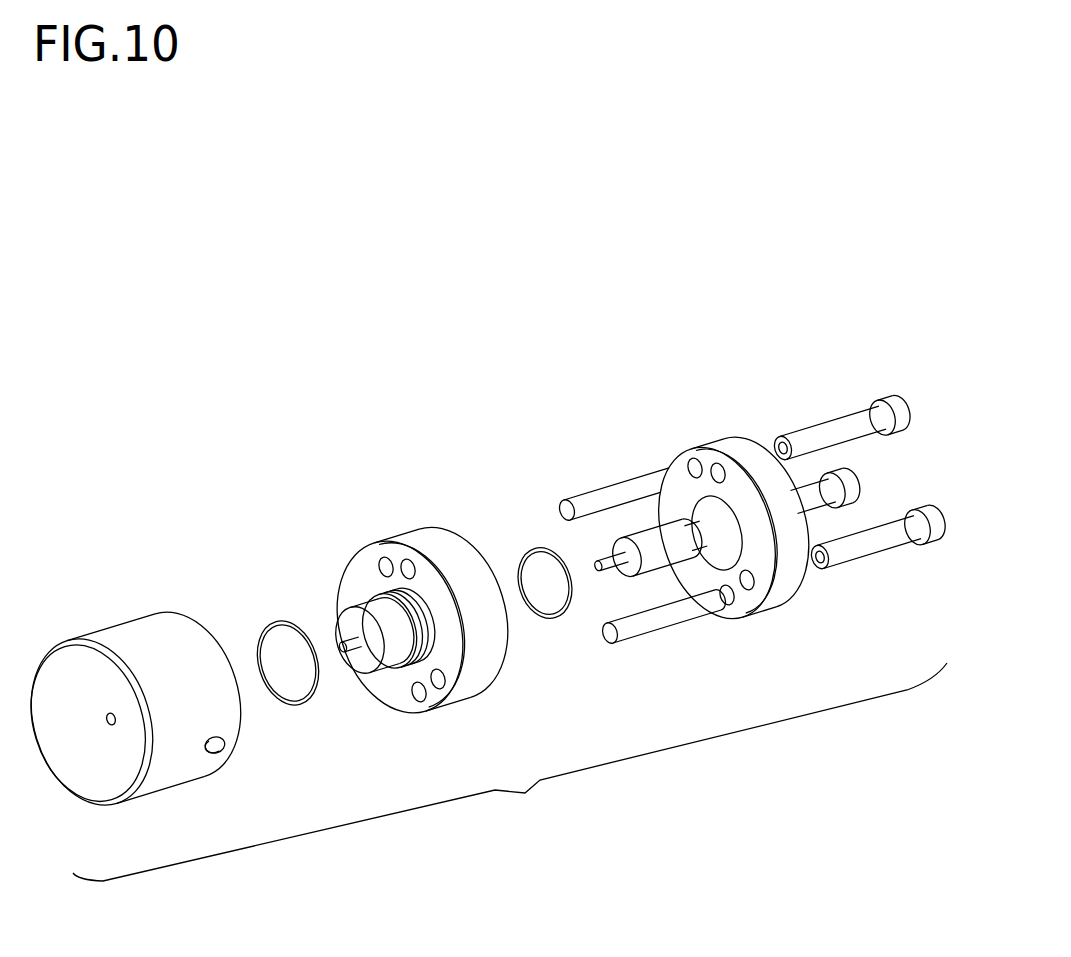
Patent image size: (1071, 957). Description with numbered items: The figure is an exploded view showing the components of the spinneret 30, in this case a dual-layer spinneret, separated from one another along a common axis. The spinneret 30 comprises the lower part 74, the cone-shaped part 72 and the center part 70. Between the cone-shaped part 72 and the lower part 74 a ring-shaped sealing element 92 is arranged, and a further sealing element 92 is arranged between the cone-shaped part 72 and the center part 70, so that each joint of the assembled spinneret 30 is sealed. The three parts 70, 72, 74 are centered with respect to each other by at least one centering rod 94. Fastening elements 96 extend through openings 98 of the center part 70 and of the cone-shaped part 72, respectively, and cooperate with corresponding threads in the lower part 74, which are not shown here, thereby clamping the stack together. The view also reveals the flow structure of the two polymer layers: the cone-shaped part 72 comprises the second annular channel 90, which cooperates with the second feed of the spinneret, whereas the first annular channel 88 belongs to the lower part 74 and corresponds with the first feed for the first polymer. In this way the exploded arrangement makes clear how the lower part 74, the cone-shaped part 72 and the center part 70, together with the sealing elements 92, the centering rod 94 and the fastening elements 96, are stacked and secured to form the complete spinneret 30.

The spinneret 30 is at (510, 772).
The center part 70 is at (730, 450).
The cone-shaped part 72 is at (440, 537).
The lower part 74 is at (142, 635).
The first annular channel 88 is at (690, 513).
The second annular channel 90 is at (392, 613).
The ring-shaped sealing element 92 is at (272, 620).
The centering rod 94 is at (593, 493).
The fastening element 96 is at (848, 427).
The opening 98 is at (388, 556).